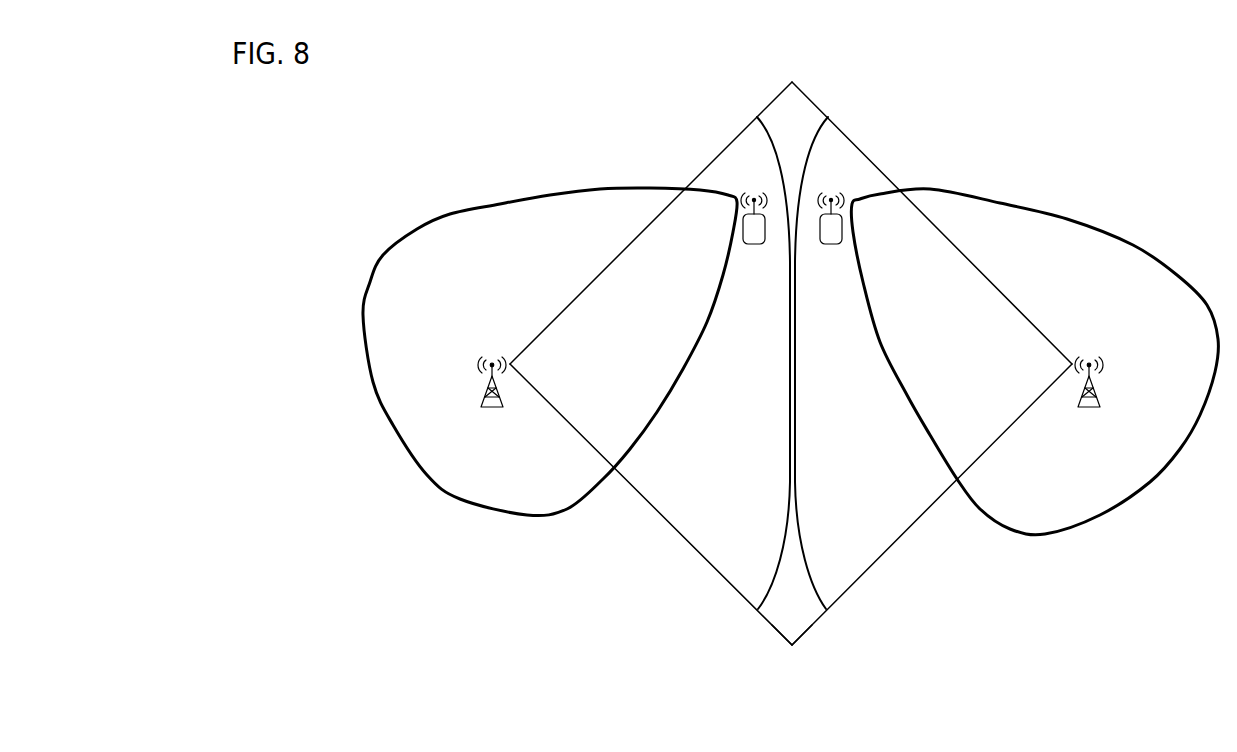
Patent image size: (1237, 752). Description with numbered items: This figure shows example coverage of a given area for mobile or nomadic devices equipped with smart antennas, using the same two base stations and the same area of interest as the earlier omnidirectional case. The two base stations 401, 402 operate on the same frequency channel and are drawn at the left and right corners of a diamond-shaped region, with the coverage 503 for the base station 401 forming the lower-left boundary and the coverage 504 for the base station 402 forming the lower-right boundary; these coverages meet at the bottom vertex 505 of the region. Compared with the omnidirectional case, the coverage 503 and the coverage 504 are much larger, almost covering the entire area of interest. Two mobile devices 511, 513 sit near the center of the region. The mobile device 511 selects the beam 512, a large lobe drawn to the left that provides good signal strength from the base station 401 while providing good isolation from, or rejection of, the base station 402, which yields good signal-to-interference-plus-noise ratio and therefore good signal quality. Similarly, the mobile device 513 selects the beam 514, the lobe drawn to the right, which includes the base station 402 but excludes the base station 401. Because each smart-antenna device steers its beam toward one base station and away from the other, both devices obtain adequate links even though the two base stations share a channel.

The base station 401 is at (491, 411).
The base station 402 is at (1067, 425).
The coverage 503 is at (651, 504).
The coverage 504 is at (932, 507).
The bottom vertex of coverage region 505 is at (761, 677).
The mobile device 511 is at (743, 269).
The beam 512 is at (550, 384).
The mobile device 513 is at (823, 270).
The beam 514 is at (1034, 400).